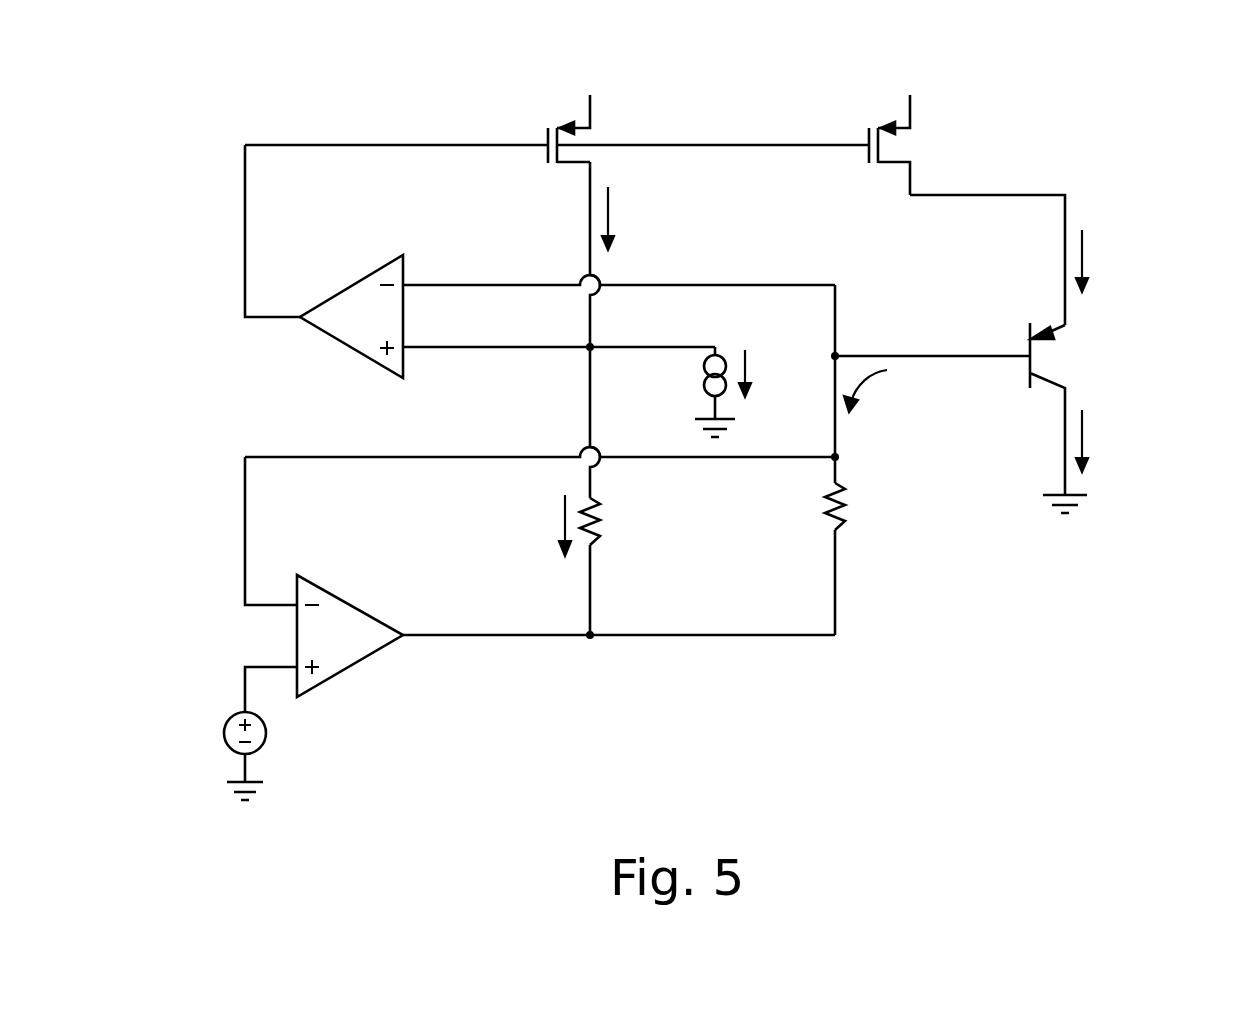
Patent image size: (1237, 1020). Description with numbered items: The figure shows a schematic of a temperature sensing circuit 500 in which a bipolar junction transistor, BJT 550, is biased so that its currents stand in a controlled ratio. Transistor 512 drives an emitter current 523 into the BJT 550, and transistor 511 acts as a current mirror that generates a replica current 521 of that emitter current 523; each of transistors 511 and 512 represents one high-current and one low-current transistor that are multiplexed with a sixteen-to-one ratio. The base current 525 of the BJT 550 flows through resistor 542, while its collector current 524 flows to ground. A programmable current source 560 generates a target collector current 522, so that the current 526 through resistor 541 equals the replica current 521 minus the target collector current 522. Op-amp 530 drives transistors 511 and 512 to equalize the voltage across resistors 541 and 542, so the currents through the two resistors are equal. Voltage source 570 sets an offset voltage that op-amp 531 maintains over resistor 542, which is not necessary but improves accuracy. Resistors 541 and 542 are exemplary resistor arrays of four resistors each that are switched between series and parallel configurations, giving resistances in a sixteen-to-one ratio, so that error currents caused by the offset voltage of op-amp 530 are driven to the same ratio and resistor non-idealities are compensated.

The current mirror / emitter current replication circuit 500 is at (596, 336).
The transistor 511 is at (545, 130).
The transistor 512 is at (866, 130).
The replica current 521 is at (697, 224).
The compensation current I_CT 522 is at (772, 362).
The emitter current 523 is at (1127, 255).
The collector current I_C 524 is at (1125, 443).
The base current I_B 525 is at (910, 405).
The difference current I_EREP - I_CT 526 is at (405, 516).
The op-amp 530 is at (351, 316).
The op-amp 531 is at (350, 636).
The resistor 541 is at (650, 520).
The resistor 542 is at (903, 515).
The BJT 550 is at (1022, 336).
The programmable current source 560 is at (702, 367).
The voltage source 570 is at (222, 734).